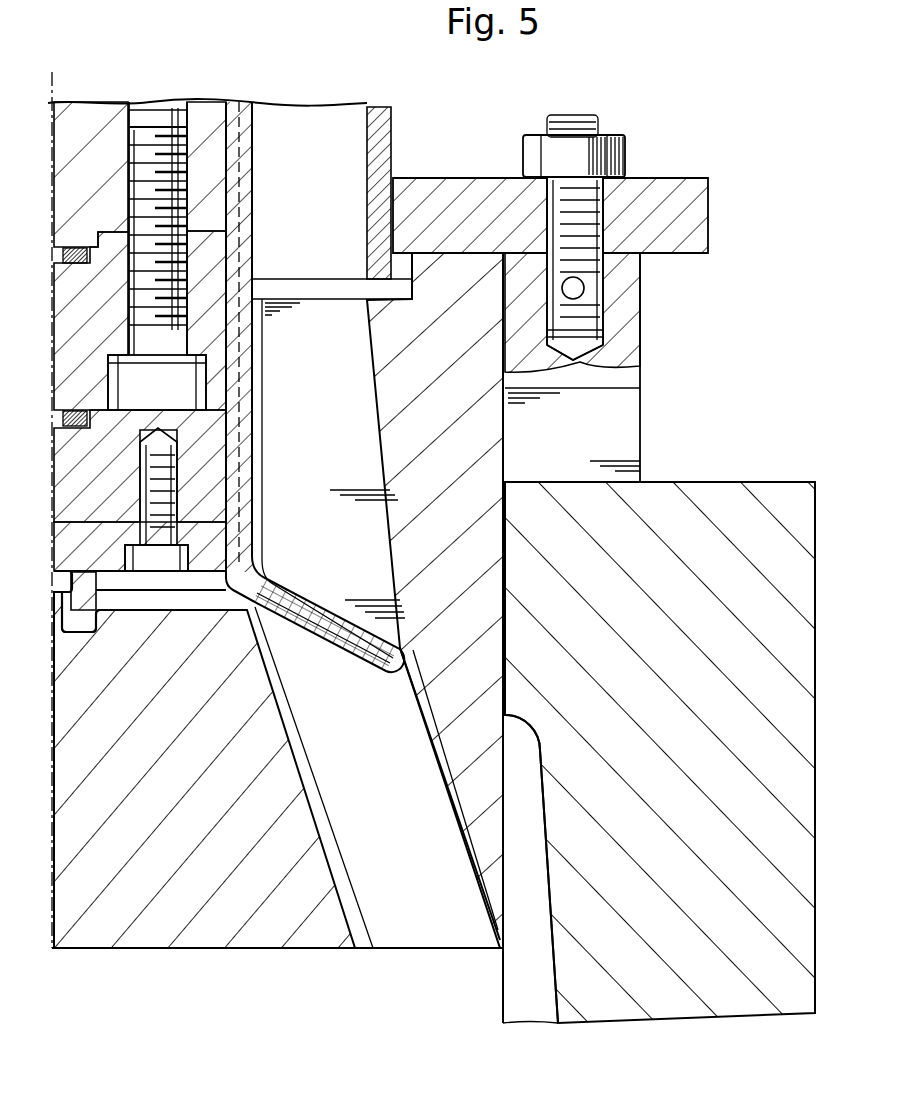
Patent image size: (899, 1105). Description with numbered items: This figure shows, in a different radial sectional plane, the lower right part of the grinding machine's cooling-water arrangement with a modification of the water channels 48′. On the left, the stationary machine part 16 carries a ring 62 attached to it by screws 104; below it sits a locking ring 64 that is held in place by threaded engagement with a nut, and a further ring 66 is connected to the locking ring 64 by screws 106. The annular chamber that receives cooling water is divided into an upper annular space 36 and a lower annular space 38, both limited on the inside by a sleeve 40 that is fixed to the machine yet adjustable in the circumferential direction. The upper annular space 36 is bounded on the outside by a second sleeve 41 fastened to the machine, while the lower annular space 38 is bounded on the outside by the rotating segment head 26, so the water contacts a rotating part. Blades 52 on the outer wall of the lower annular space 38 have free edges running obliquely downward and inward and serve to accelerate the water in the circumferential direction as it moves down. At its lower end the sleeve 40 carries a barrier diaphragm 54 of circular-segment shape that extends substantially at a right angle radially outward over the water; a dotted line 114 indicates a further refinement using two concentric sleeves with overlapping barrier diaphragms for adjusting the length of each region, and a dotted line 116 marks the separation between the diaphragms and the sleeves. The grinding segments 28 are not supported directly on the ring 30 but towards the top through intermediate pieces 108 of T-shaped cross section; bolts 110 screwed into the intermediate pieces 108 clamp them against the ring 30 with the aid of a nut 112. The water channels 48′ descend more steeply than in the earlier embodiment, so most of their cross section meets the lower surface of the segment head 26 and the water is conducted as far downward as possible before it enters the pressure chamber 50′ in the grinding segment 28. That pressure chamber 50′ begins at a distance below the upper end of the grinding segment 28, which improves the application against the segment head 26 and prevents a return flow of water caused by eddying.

The stationary machine part 16 is at (100, 110).
The segment head 26 is at (175, 928).
The grinding segments 28 is at (668, 992).
The ring 30 is at (675, 190).
The upper annular space 36 is at (330, 106).
The lower annular space 38 is at (259, 306).
The sleeve 40 is at (243, 205).
The sleeve 41 is at (385, 152).
The water channels 48′ is at (405, 930).
The pressure chamber 50′ is at (531, 1000).
The blades 52 is at (353, 476).
The barrier diaphragm 54 is at (303, 604).
The ring 62 is at (206, 268).
The locking ring 64 is at (216, 447).
The ring 66 is at (219, 567).
The screws 104 is at (187, 170).
The screws 106 is at (188, 510).
The intermediate pieces 108 is at (632, 335).
The bolts 110 is at (564, 120).
The nut 112 is at (614, 152).
The dotted line 114 is at (254, 356).
The dotted line 116 is at (251, 567).